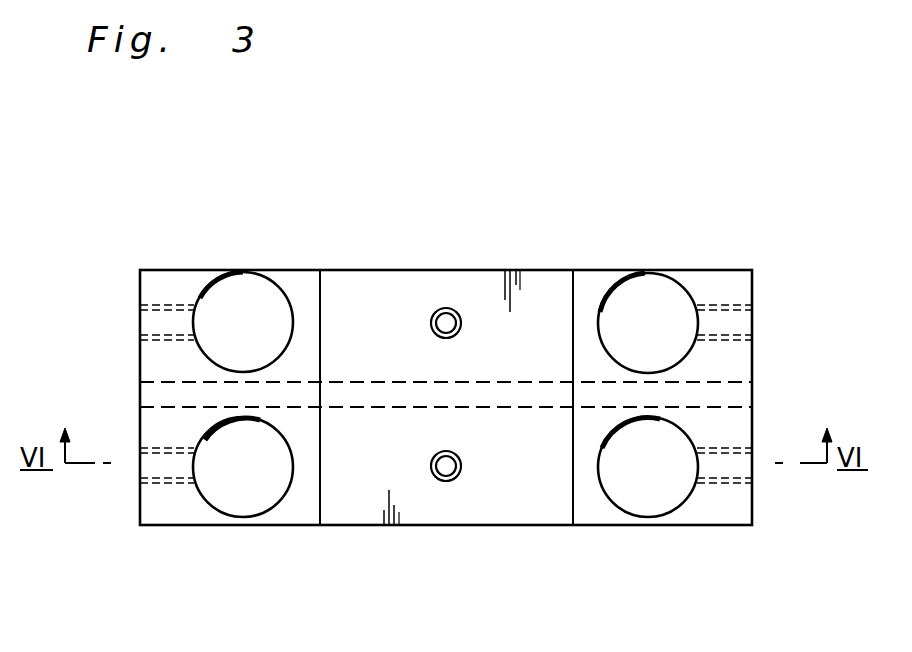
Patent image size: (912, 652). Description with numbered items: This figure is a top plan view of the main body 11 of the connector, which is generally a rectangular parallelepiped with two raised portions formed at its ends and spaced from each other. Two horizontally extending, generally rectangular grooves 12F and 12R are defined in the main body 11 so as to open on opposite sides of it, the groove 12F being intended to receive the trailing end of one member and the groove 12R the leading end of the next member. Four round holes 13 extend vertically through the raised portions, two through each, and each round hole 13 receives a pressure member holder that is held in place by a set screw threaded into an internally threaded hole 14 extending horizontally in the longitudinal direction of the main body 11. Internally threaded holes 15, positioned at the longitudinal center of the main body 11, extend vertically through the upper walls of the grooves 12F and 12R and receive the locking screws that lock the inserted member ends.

The main body 11 is at (541, 268).
The rectangular groove 12R is at (378, 300).
The rectangular groove 12F is at (360, 490).
The round holes 13 is at (218, 285).
The internally threaded hole 14 is at (140, 333).
The internally threaded holes 15 is at (460, 311).